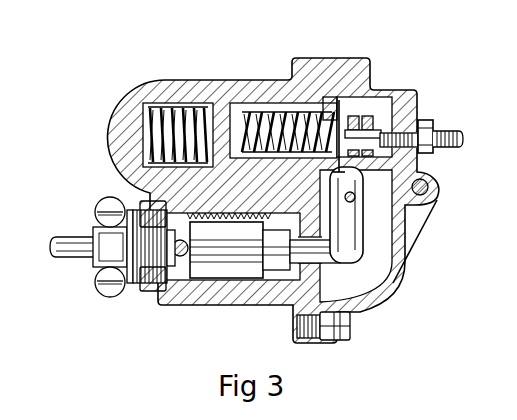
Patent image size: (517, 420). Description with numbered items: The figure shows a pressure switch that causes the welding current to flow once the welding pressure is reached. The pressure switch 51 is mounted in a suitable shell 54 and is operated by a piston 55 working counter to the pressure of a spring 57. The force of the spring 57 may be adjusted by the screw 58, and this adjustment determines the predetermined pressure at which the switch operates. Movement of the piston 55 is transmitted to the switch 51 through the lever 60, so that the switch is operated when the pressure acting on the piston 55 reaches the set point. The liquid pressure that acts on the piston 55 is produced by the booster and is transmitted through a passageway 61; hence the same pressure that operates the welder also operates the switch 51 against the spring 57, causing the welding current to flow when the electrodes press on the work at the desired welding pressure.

The pressure switch 51 is at (230, 258).
The shell 54 is at (272, 290).
The piston 55 is at (268, 102).
The spring 57 is at (323, 100).
The screw 58 is at (447, 130).
The lever 60 is at (354, 237).
The passageway 61 is at (182, 103).